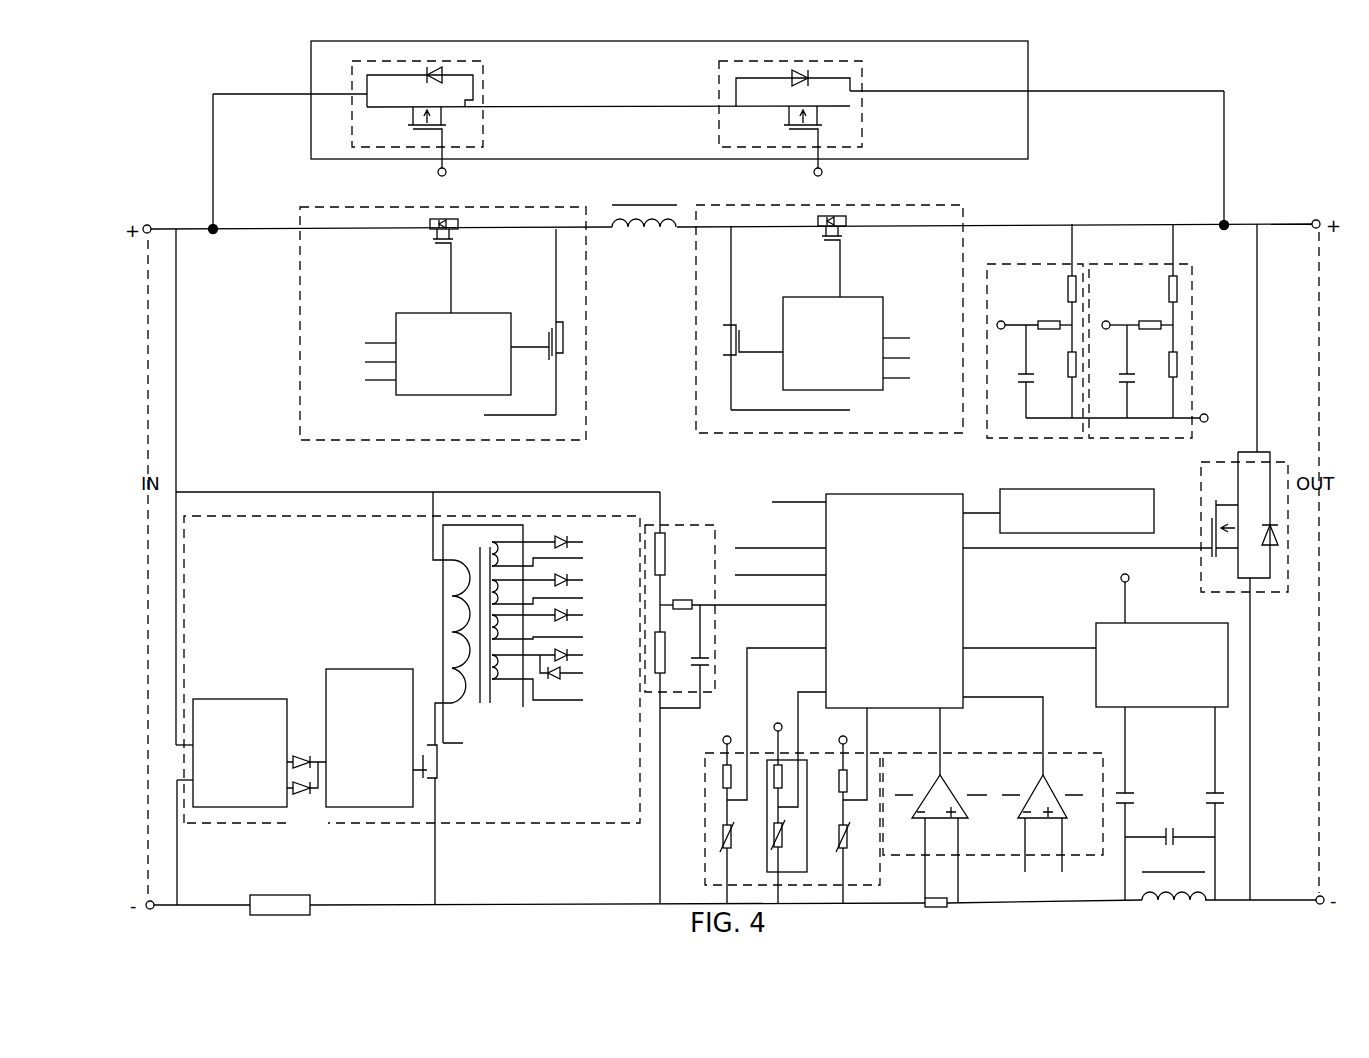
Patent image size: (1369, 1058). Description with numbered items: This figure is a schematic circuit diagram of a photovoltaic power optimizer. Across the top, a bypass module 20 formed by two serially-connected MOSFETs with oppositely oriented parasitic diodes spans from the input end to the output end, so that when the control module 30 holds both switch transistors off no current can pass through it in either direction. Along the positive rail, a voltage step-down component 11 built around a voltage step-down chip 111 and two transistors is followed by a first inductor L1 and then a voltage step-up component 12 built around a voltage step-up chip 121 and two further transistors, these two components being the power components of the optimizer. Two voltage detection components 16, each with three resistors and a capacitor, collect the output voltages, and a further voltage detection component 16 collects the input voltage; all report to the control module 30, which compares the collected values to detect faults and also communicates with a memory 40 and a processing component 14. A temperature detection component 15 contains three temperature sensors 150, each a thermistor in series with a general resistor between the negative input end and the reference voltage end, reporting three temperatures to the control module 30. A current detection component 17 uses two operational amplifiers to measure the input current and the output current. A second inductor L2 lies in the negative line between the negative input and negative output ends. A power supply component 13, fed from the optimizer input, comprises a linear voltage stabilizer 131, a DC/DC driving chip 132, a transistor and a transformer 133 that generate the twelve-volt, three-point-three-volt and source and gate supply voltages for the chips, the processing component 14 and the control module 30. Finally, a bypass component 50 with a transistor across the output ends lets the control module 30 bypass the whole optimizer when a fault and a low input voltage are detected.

The bypass module 20 is at (483, 82).
The voltage step-down component 11 is at (465, 323).
The voltage step-down chip 111 is at (453, 354).
The voltage step-up component 12 is at (811, 319).
The voltage step-up chip 121 is at (833, 343).
The voltage detection component 16 is at (1037, 264).
The bypass component 50 is at (1268, 462).
The memory 40 is at (1058, 511).
The control module 30 is at (909, 649).
The processing component 14 is at (1154, 734).
The current detection component 17 is at (1048, 753).
The temperature detection component 15 is at (776, 801).
The temperature sensor 150 is at (807, 822).
The power supply component 13 is at (418, 685).
The linear voltage stabilizer 131 is at (240, 753).
The DC/DC driving chip 132 is at (369, 738).
The transformer 133 is at (534, 642).
The first inductor L1 is at (644, 230).
The second inductor L2 is at (1174, 893).